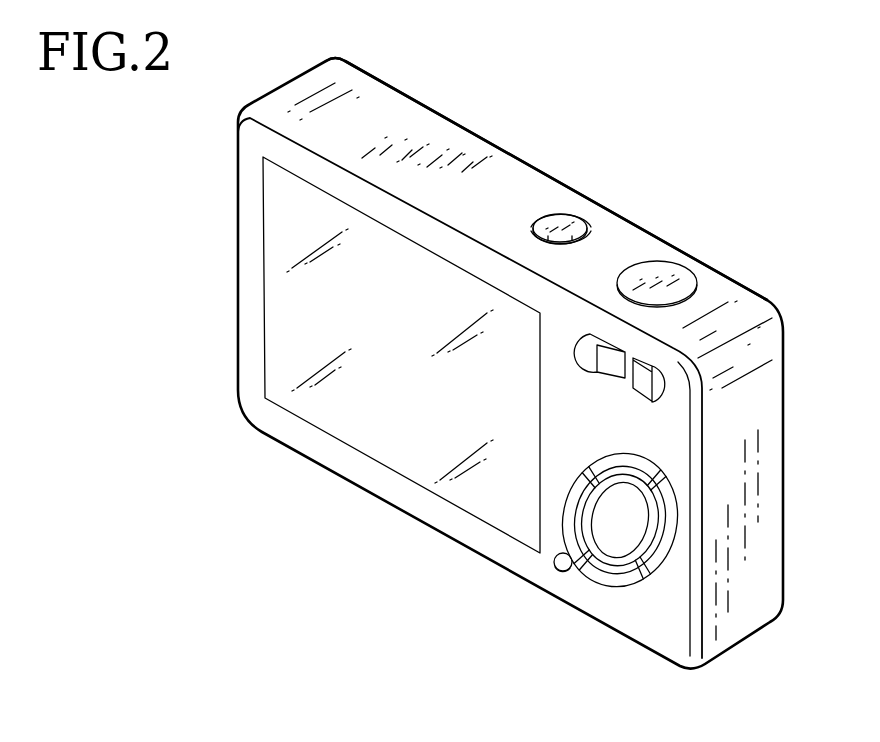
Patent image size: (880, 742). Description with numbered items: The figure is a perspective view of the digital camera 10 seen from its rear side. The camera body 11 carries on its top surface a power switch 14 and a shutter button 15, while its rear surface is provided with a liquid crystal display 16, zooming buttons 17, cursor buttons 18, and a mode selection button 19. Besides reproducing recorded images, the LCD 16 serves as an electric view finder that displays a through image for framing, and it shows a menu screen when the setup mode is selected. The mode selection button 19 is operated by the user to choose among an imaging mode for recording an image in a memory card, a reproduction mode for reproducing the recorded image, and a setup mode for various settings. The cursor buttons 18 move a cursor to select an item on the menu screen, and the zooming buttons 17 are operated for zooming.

The digital camera 10 is at (675, 136).
The camera body 11 is at (433, 112).
The power switch 14 is at (558, 218).
The shutter button 15 is at (660, 267).
The liquid crystal display (LCD) 16 is at (390, 405).
The zooming buttons 17 is at (683, 398).
The cursor buttons 18 is at (605, 578).
The mode selection button 19 is at (556, 571).